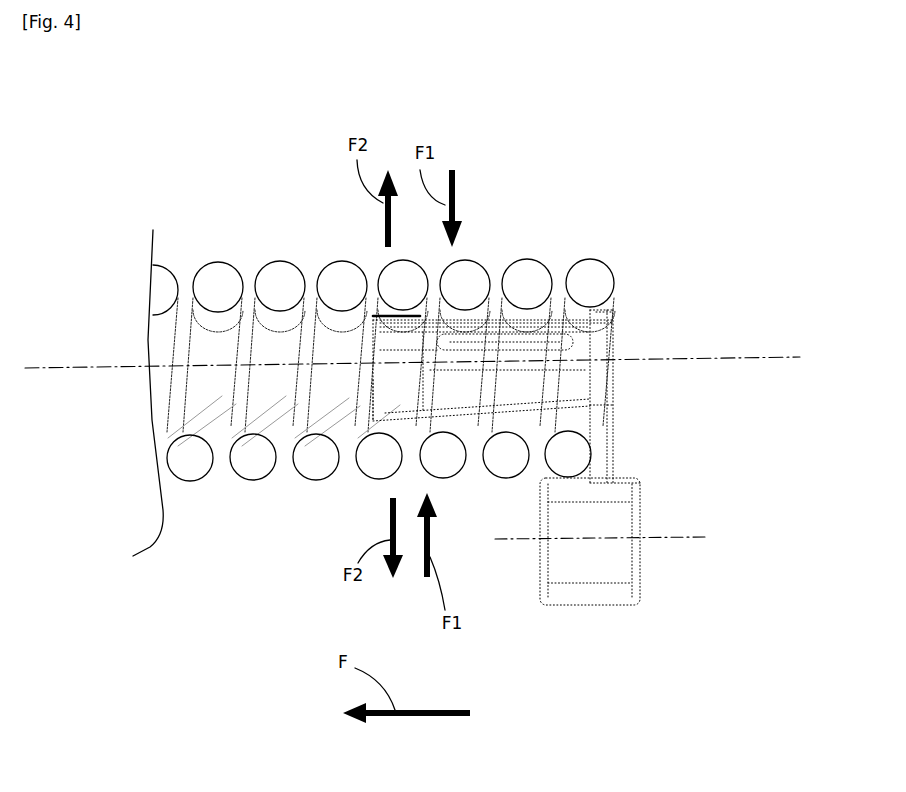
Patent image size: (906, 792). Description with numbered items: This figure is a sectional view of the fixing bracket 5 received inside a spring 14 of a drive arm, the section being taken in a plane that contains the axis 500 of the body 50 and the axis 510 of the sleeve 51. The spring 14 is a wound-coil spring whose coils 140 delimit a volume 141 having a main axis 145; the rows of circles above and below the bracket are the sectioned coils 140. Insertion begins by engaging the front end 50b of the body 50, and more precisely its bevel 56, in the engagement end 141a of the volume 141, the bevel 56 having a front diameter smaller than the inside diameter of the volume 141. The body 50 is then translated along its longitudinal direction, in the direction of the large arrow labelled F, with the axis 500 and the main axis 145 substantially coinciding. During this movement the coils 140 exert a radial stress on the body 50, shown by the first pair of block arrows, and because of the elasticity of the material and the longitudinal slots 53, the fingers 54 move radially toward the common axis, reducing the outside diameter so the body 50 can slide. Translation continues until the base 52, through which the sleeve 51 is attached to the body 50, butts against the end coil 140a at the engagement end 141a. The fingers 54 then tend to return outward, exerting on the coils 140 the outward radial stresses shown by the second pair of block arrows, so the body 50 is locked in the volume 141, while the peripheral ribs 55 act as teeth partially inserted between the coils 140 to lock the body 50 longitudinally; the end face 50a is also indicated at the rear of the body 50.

The spring 14 is at (413, 321).
The coils 140 is at (210, 266).
The volume 141 is at (200, 348).
The end coil 140a is at (593, 258).
The engagement end 141a is at (622, 310).
The axis 500 is at (412, 321).
The main axis 145 is at (130, 370).
The fixing bracket 5 is at (486, 407).
The body 50 is at (486, 330).
The body end face 50a is at (618, 352).
The front end 50b is at (375, 393).
The sleeve 51 is at (625, 574).
The axis 510 is at (682, 539).
The base 52 is at (618, 443).
The longitudinal slots 53 is at (453, 340).
The fingers 54 is at (507, 387).
The peripheral ribs 55 is at (495, 317).
The bevel 56 is at (388, 310).